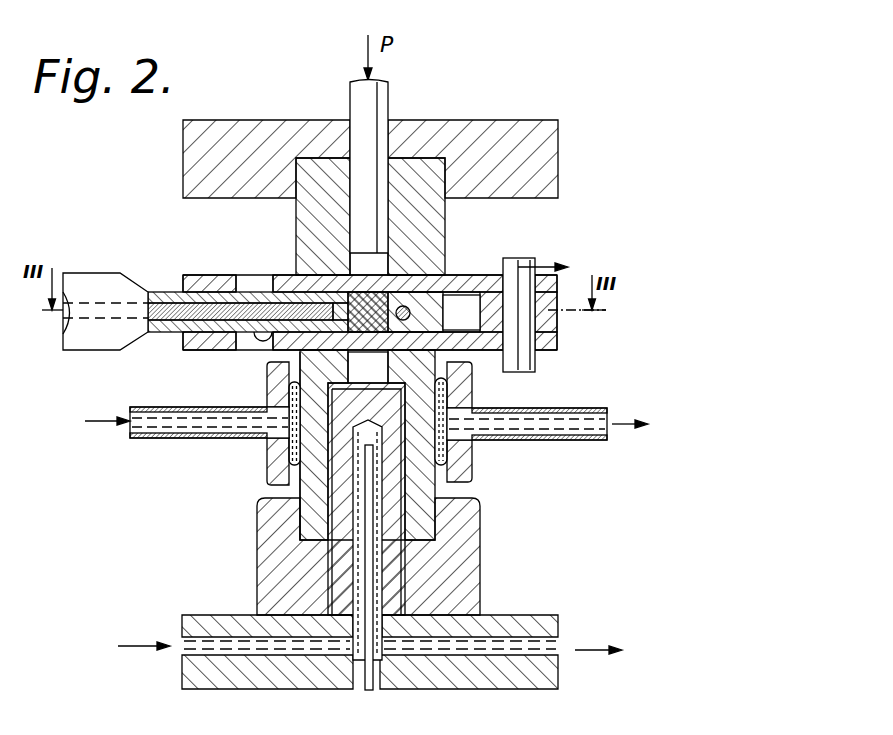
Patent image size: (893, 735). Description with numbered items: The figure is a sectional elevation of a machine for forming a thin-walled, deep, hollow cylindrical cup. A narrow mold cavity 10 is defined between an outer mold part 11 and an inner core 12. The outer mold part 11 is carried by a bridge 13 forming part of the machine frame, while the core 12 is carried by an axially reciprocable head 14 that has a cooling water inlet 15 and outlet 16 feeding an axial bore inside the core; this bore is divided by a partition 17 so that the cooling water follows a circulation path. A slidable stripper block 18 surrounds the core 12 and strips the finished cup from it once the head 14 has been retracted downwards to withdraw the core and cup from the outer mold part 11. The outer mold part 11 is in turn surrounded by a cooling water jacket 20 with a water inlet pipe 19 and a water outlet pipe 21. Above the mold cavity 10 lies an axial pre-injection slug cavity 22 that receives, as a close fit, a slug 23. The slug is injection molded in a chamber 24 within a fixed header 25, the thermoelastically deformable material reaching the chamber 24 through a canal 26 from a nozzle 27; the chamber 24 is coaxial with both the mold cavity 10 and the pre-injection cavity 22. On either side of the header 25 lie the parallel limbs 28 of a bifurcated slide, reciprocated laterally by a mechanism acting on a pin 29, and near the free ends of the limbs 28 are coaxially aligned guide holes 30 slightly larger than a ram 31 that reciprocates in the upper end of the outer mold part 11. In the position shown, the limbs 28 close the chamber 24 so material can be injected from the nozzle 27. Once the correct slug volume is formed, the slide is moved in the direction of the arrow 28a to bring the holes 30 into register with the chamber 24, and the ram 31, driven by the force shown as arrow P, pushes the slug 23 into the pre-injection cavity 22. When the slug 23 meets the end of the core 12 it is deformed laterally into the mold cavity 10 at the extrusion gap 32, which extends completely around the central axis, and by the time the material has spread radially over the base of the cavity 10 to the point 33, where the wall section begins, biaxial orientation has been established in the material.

The mold cavity 10 is at (405, 497).
The outer mold part 11 is at (300, 492).
The inner core 12 is at (340, 520).
The bridge 13 is at (496, 126).
The axially reciprocable head 14 is at (182, 620).
The cooling water inlet 15 is at (190, 648).
The cooling water outlet 16 is at (557, 650).
The partition 17 is at (368, 552).
The stripper block 18 is at (270, 572).
The water inlet pipe 19 is at (156, 440).
The cooling water jacket 20 is at (268, 460).
The water outlet pipe 21 is at (540, 440).
The pre-injection slug cavity 22 is at (448, 378).
The slug 23 is at (350, 253).
The chamber 24 is at (348, 298).
The fixed header 25 is at (163, 334).
The canal 26 is at (167, 290).
The nozzle 27 is at (86, 272).
The limbs of bifurcated slide 28 is at (369, 338).
The arrow 28a is at (548, 257).
The pin 29 is at (516, 258).
The guide holes 30 is at (259, 336).
The ram 31 is at (350, 93).
The extrusion gap 32 is at (295, 376).
The point 33 is at (450, 400).